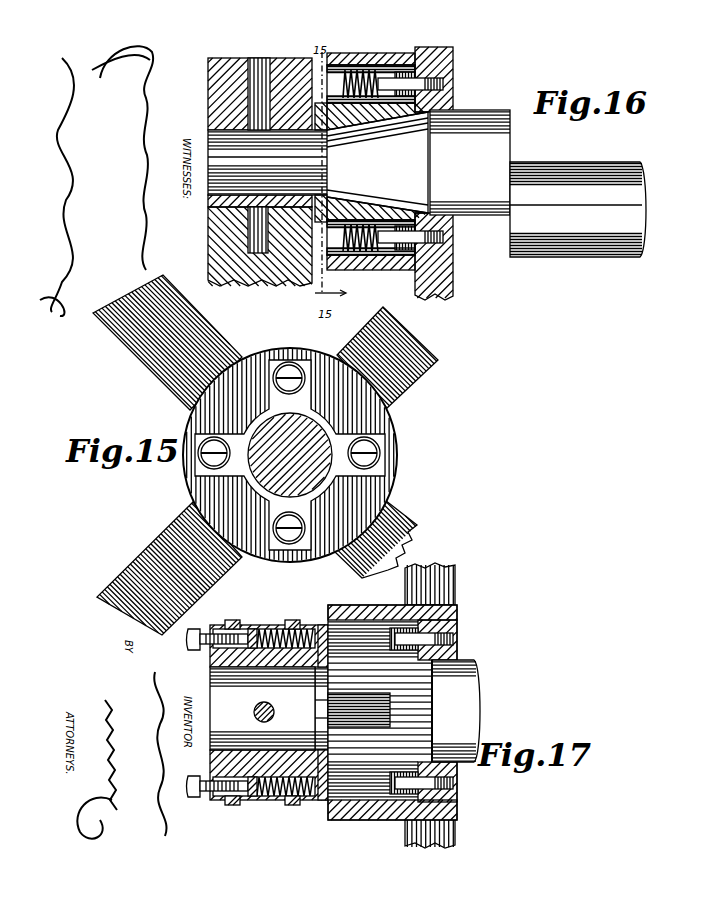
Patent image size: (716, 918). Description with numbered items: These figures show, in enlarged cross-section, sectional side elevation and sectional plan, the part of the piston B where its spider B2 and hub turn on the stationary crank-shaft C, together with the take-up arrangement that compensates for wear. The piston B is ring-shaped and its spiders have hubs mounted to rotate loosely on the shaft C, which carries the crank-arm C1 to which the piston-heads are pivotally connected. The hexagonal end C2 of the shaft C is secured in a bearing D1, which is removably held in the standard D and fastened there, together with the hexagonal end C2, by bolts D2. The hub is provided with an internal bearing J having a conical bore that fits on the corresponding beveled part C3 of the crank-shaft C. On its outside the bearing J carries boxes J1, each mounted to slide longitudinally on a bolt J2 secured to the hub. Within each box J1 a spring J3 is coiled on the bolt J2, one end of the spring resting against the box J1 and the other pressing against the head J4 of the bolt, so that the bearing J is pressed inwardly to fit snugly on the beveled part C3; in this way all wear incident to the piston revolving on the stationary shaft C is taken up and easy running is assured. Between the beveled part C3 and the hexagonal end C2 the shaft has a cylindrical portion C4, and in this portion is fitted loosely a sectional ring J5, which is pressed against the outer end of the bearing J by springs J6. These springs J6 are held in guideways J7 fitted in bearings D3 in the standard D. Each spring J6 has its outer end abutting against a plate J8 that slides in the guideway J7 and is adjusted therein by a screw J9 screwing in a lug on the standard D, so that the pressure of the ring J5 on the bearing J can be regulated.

In FIG. 15, the piston B is at (260, 366).
In FIG. 16, the spider B2 is at (450, 296).
In FIG. 15, the spider B2 is at (408, 390).
In FIG. 17, the spider B2 is at (455, 582).
In FIG. 16, the shaft C is at (448, 126).
In FIG. 17, the shaft C is at (478, 660).
In FIG. 16, the crank-arm C1 is at (580, 238).
In FIG. 16, the hexagonal end C2 is at (208, 145).
In FIG. 17, the hexagonal end C2 is at (269, 708).
In FIG. 16, the beveled part C3 is at (378, 175).
In FIG. 15, the beveled part C3 is at (300, 440).
In FIG. 16, the cylindrical portion C4 is at (326, 168).
In FIG. 17, the cylindrical portion C4 is at (322, 716).
In FIG. 16, the standard D is at (260, 181).
In FIG. 17, the standard D is at (210, 660).
In FIG. 16, the bearing D1 is at (214, 70).
In FIG. 17, the bolt D2 is at (274, 708).
In FIG. 17, the bearing D3 is at (232, 620).
In FIG. 16, the internal bearing J is at (380, 176).
In FIG. 15, the internal bearing J is at (290, 455).
In FIG. 17, the internal bearing J is at (392, 712).
In FIG. 16, the box J1 is at (368, 256).
In FIG. 15, the box J1 is at (312, 362).
In FIG. 17, the box J1 is at (370, 696).
In FIG. 16, the bolt J2 is at (455, 76).
In FIG. 17, the bolt J2 is at (400, 628).
In FIG. 16, the spring J3 is at (395, 92).
In FIG. 17, the spring J3 is at (455, 650).
In FIG. 16, the head J4 is at (358, 100).
In FIG. 15, the head J4 is at (286, 368).
In FIG. 16, the sectional ring J5 is at (320, 225).
In FIG. 17, the sectional ring J5 is at (322, 626).
In FIG. 17, the spring J6 is at (280, 628).
In FIG. 17, the guideway J7 is at (304, 626).
In FIG. 17, the plate J8 is at (252, 628).
In FIG. 17, the screw J9 is at (210, 630).